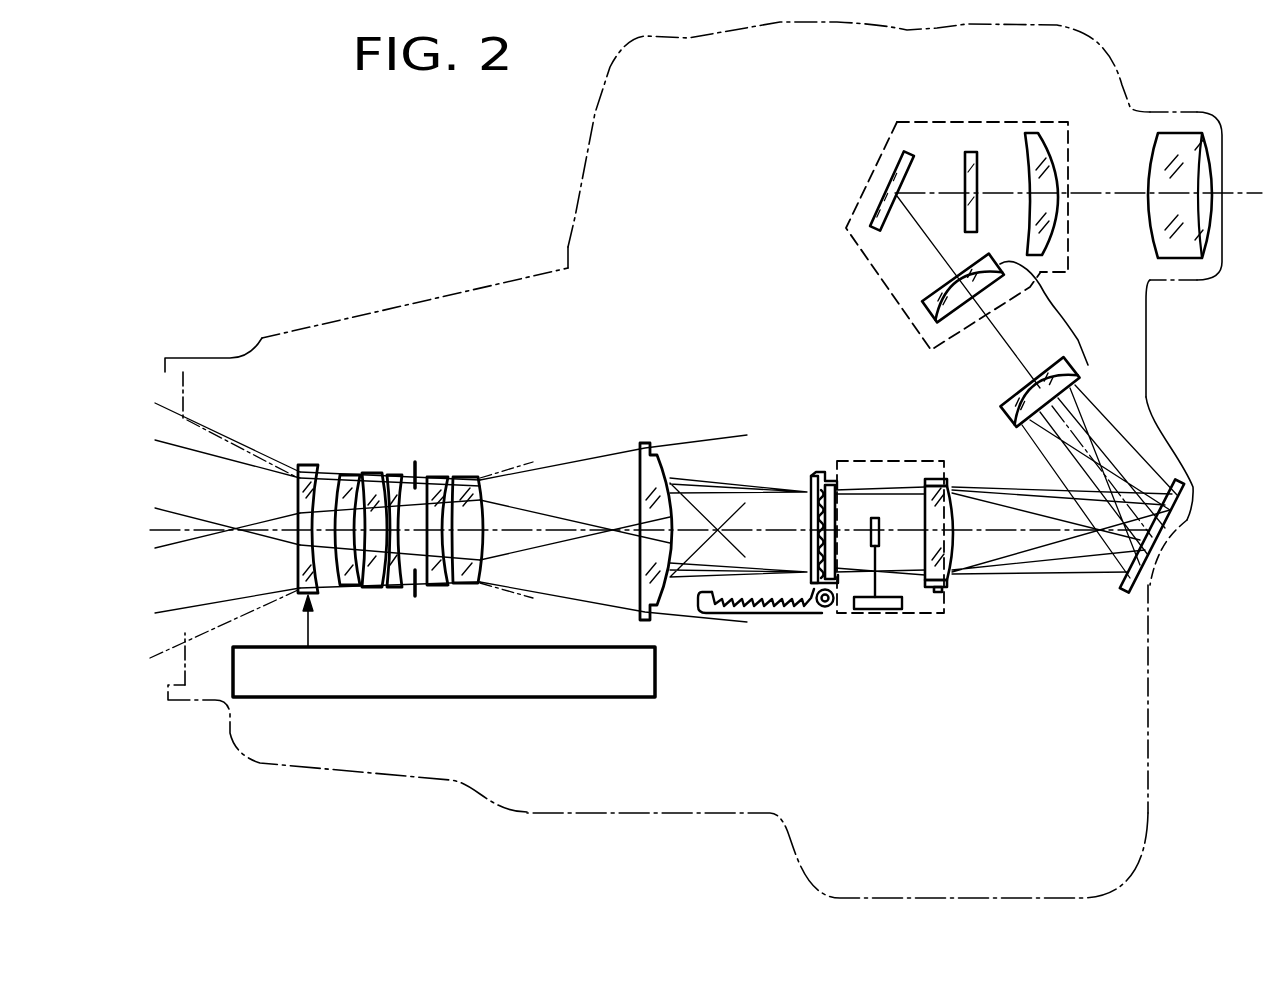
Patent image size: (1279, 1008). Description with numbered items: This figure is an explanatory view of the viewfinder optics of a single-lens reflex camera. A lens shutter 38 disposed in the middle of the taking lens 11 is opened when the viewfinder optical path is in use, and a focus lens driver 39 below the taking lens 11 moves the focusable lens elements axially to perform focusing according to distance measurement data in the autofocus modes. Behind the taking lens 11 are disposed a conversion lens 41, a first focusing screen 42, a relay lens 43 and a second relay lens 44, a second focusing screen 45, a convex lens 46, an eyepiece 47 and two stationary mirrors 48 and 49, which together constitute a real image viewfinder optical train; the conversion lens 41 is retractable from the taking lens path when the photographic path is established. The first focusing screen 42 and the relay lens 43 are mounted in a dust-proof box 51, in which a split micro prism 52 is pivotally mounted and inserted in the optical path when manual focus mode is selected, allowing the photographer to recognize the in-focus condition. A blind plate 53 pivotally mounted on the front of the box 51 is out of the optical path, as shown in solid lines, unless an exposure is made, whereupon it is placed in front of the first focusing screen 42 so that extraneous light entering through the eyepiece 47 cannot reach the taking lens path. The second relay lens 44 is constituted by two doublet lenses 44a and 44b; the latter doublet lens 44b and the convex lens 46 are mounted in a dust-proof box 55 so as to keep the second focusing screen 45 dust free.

The taking lens 11 is at (368, 440).
The lens shutter 38 is at (420, 465).
The focus lens driver 39 is at (428, 697).
The conversion lens 41 is at (637, 567).
The first focusing screen 42 is at (835, 503).
The relay lens 43 is at (955, 555).
The second relay lens 44 is at (1049, 313).
The doublet lens 44a is at (1002, 405).
The doublet lens 44b is at (932, 321).
The second focusing screen 45 is at (971, 152).
The convex lens 46 is at (1035, 133).
The eyepiece 47 is at (1182, 133).
The stationary mirror 48 is at (1180, 528).
The stationary mirror 49 is at (893, 192).
The dust-proof box 51 is at (898, 617).
The split micro prism 52 is at (878, 518).
The blind plate 53 is at (812, 473).
The dust-proof box 55 is at (888, 288).